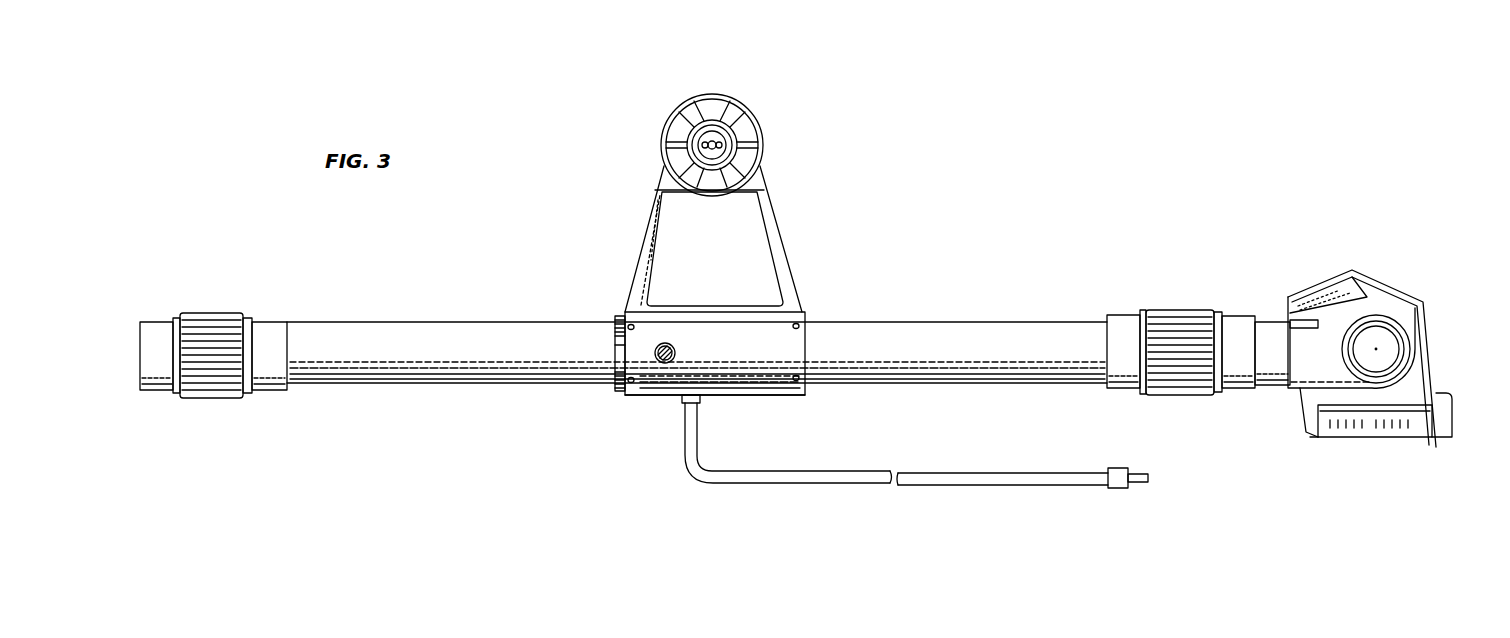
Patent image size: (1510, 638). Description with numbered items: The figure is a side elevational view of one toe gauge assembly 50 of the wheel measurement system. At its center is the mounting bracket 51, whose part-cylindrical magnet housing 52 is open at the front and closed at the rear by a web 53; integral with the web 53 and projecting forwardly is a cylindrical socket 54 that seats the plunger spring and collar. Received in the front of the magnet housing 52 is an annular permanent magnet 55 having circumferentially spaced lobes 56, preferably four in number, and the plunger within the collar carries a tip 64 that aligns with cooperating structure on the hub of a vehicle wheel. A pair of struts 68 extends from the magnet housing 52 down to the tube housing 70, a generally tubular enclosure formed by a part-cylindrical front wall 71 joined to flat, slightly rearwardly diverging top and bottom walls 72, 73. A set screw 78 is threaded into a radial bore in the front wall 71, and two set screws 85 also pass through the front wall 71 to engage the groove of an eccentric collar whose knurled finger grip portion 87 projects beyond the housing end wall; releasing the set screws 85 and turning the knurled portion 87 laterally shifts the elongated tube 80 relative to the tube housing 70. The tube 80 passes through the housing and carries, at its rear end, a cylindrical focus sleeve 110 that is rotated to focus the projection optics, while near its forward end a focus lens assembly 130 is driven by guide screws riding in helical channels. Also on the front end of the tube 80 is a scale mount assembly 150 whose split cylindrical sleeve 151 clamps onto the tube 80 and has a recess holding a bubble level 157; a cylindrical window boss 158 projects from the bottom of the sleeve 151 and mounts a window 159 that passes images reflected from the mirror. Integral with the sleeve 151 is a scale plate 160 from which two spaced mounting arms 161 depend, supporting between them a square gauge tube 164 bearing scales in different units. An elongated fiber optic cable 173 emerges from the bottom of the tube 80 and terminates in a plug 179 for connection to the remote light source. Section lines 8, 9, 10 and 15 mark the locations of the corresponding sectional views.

The toe gauge assembly 50 is at (950, 234).
The focus sleeve 110 is at (147, 324).
The tube 80 is at (404, 320).
The section line 9 is at (757, 53).
The lobes 56 is at (700, 108).
The cylindrical socket 54 is at (714, 121).
The magnet housing 52 is at (748, 133).
The annular permanent magnet 55 is at (745, 136).
The tip 64 is at (706, 148).
The mounting bracket 51 is at (632, 228).
The web 53 is at (673, 191).
The struts 68 is at (772, 247).
The top wall 72 is at (670, 305).
The front wall 71 is at (752, 333).
The knurled finger grip portion 87 is at (614, 332).
The set screws 85 is at (630, 331).
The section line 8 is at (659, 323).
The set screw 78 is at (660, 363).
The bottom wall 73 is at (649, 397).
The tube housing 70 is at (785, 399).
The fiber optic cable 173 is at (960, 478).
The plug 179 is at (1114, 470).
The focus lens assembly 130 is at (1198, 310).
The section line 10 is at (1233, 380).
The scale mount assembly 150 is at (1366, 333).
The split cylindrical sleeve 151 is at (1387, 318).
The scale plate 160 is at (1410, 373).
The bubble level 157 is at (1300, 322).
The window boss 158 is at (1393, 340).
The window 159 is at (1363, 345).
The gauge tube 164 is at (1378, 440).
The mounting arms 161 is at (1303, 428).
The section line 15 is at (1275, 405).